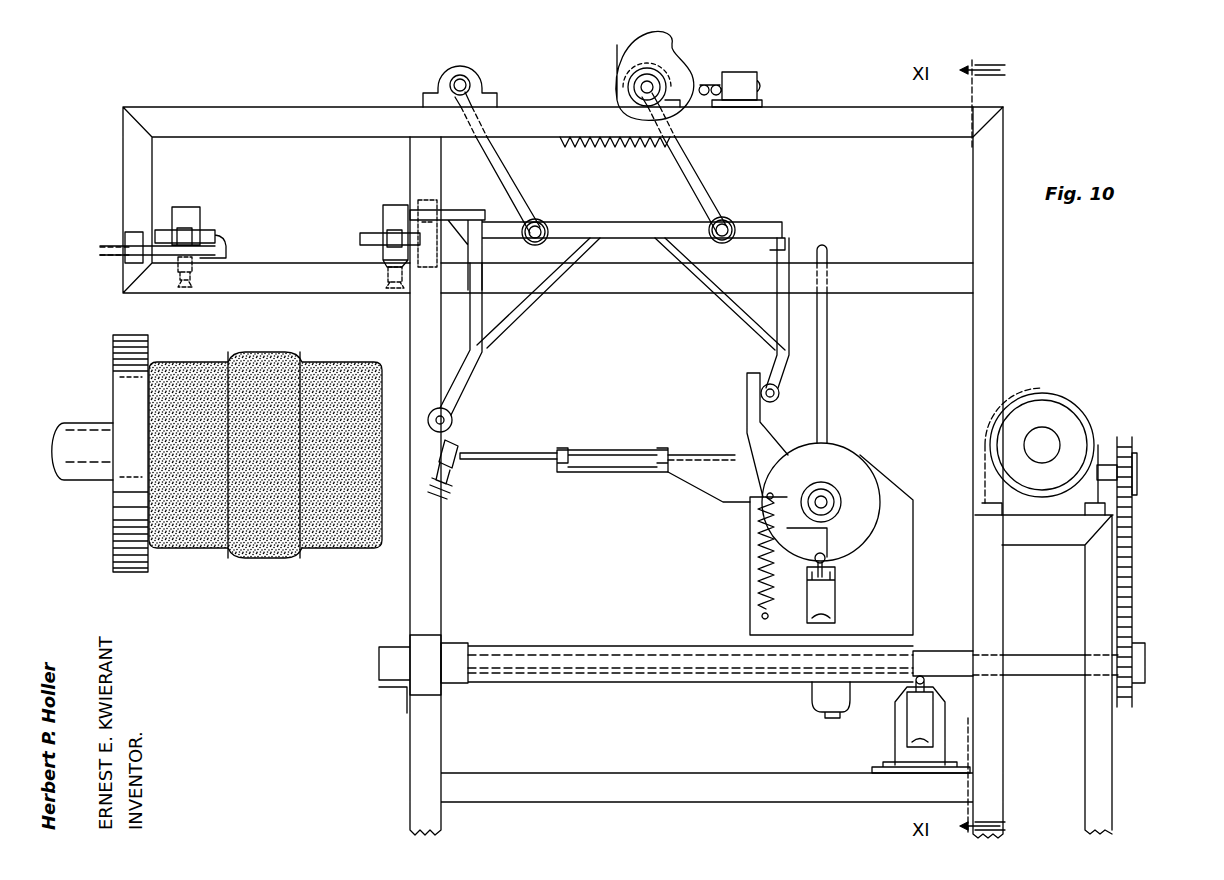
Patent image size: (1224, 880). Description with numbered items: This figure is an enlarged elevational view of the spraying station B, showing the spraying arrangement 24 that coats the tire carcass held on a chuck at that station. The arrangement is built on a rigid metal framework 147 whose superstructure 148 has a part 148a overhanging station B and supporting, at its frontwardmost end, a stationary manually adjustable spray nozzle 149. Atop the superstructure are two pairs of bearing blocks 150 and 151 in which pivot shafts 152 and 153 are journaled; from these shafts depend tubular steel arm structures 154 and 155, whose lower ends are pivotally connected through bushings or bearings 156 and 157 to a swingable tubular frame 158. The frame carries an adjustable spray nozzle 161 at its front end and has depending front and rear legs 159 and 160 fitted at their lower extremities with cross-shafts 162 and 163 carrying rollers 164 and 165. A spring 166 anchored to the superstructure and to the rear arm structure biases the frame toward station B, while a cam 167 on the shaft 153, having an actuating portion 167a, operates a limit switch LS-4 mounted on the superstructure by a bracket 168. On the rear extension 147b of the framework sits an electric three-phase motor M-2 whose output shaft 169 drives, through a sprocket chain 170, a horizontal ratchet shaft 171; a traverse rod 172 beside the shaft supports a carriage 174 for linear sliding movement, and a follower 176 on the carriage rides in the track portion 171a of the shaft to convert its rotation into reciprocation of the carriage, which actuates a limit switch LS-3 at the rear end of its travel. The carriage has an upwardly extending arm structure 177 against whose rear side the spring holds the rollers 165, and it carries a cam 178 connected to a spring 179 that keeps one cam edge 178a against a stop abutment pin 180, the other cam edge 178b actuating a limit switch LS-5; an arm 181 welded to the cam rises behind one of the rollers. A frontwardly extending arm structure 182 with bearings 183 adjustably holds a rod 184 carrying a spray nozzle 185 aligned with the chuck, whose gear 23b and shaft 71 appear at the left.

The superstructure 148 is at (838, 110).
The part of superstructure 148a is at (232, 282).
The framework 147 is at (415, 571).
The rear extension of framework 147b is at (1100, 741).
The spraying arrangement 24 is at (361, 627).
The spray nozzle 149 is at (192, 216).
The spray nozzle 161 is at (383, 214).
The bearing blocks 150 is at (490, 98).
The pivot shaft 152 is at (462, 78).
The arm structure 154 is at (500, 176).
The cam 167 is at (628, 46).
The cam notch 167a is at (675, 50).
The bearing blocks 151 is at (618, 100).
The pivot shaft 153 is at (655, 88).
The arm structure 155 is at (700, 184).
The limit switch LS-4 is at (745, 80).
The bracket 168 is at (734, 104).
The spring 166 is at (608, 146).
The frame 158 is at (624, 232).
The bushings or bearings 156 is at (546, 222).
The bushings or bearings 157 is at (735, 222).
The front leg 159 is at (475, 313).
The rear leg 160 is at (770, 350).
The arm 181 is at (826, 355).
The cross-shaft 162 is at (452, 420).
The rollers 164 is at (462, 408).
The spray nozzle 185 is at (462, 450).
The rod 184 is at (519, 460).
The bearings 183 is at (658, 452).
The arm structure 182 is at (682, 497).
The arm structure 177 is at (746, 413).
The cross-shaft 163 is at (762, 393).
The rollers 165 is at (770, 402).
The carriage 174 is at (900, 567).
The cam 178 is at (868, 487).
The cam edge 178a is at (782, 492).
The cam edge 178b is at (828, 547).
The stop abutment pin 180 is at (808, 534).
The spring 179 is at (760, 581).
The limit switch LS-5 is at (825, 604).
The track portion 171a is at (666, 648).
The traverse rod 172 is at (950, 650).
The ratchet shaft 171 is at (1018, 670).
The follower 176 is at (812, 702).
The limit switch LS-3 is at (905, 727).
The electric three-phase motor M-2 is at (1062, 410).
The output shaft 169 is at (1108, 465).
The sprocket chain 170 is at (1130, 535).
The spraying station B is at (265, 476).
The spool gear 23b is at (148, 558).
The spool shaft 71 is at (85, 478).